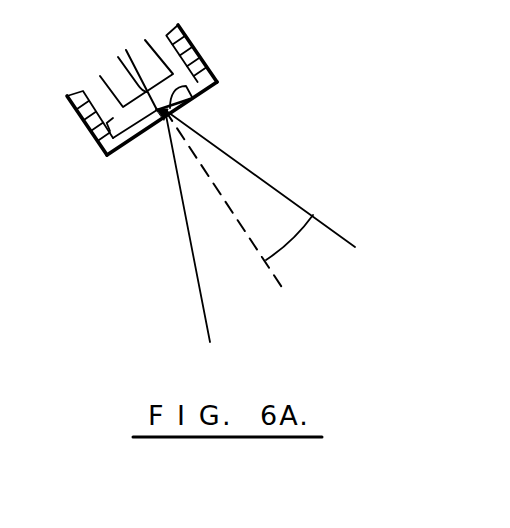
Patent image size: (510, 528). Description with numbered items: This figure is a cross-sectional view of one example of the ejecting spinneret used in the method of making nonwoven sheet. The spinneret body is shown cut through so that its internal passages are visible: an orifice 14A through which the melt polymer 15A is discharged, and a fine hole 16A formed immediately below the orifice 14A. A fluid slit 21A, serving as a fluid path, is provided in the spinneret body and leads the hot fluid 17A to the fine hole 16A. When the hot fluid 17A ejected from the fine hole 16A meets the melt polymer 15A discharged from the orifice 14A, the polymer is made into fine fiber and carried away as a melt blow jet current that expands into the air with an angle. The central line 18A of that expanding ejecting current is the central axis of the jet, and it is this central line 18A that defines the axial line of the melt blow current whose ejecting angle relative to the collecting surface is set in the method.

The orifice 14A is at (199, 52).
The melt polymer 15A is at (186, 86).
The fine hole 16A is at (173, 108).
The hot fluid 17A is at (272, 184).
The central line 18A is at (313, 216).
The fluid slit 21A is at (103, 137).